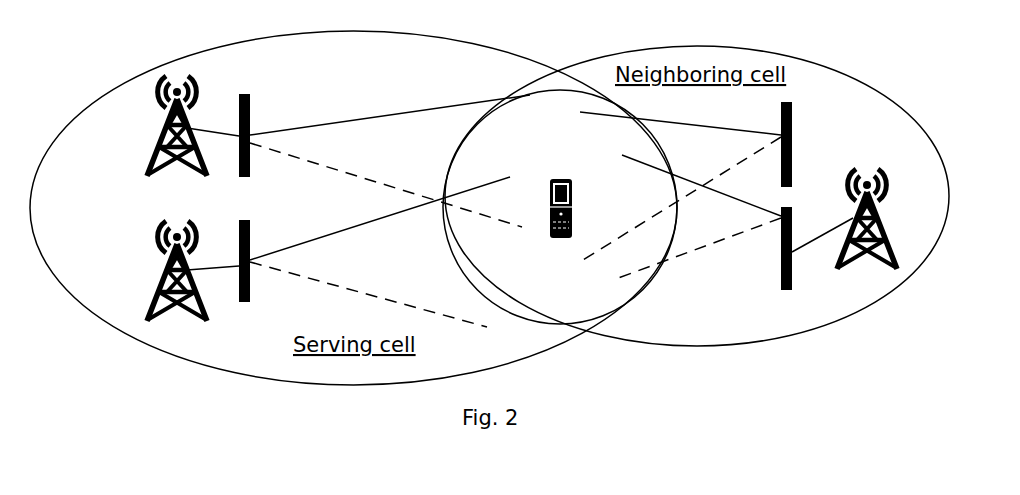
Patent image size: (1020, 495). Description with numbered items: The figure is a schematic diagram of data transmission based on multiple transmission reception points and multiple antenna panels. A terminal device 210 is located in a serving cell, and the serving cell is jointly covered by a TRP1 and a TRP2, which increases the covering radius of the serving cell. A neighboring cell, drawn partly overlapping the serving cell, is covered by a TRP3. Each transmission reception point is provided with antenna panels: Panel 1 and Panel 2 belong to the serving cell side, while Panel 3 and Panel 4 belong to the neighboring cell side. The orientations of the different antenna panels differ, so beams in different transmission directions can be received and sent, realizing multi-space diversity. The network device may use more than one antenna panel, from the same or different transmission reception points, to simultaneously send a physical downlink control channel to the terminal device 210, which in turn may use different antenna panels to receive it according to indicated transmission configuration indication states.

The terminal device 210 is at (570, 179).
The element TRP1 is at (152, 126).
The element TRP2 is at (148, 271).
The element TRP3 is at (888, 219).
The Panel 1 is at (287, 131).
The Panel 2 is at (287, 257).
The Panel 3 is at (826, 144).
The Panel 4 is at (784, 261).